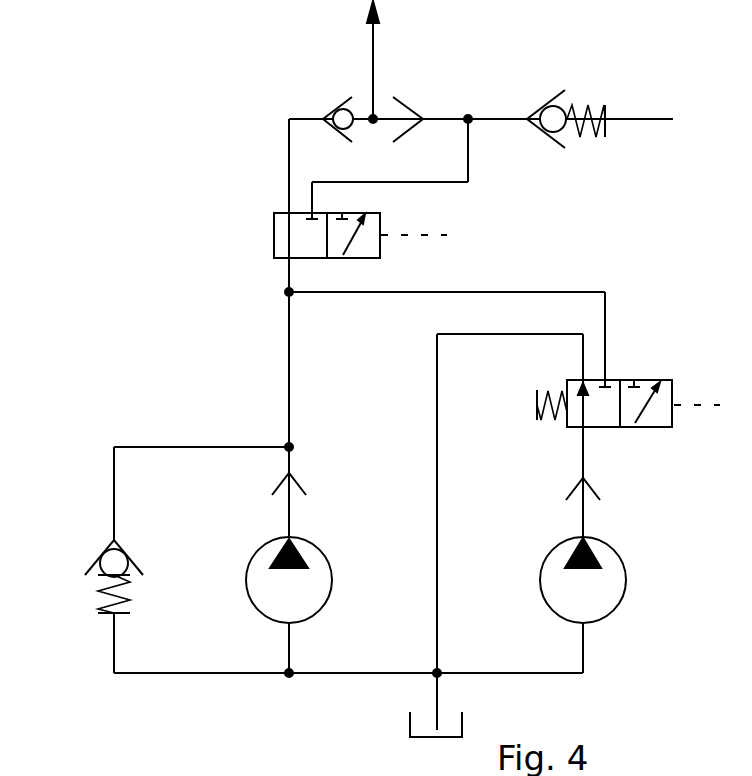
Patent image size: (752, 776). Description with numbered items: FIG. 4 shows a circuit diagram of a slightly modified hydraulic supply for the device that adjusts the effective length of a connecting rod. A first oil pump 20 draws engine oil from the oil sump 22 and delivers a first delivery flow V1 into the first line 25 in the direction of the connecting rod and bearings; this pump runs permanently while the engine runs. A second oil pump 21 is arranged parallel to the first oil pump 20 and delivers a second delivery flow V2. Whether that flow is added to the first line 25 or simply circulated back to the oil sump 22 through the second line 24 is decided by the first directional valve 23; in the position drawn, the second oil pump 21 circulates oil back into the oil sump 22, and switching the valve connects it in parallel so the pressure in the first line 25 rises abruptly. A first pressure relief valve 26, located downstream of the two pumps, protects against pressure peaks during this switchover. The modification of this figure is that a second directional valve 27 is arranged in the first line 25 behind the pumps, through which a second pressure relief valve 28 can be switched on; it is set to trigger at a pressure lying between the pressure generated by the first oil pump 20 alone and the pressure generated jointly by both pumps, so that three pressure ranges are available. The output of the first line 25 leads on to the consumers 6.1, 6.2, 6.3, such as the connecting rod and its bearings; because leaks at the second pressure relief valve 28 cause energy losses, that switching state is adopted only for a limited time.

The hydraulic consumer 6.1 is at (447, 59).
The hydraulic consumer 6.2 is at (447, 59).
The hydraulic consumer 6.3 is at (447, 59).
The first oil pump 20 is at (333, 580).
The second oil pump 21 is at (627, 580).
The oil sump 22 is at (410, 725).
The first directional valve 23 is at (656, 380).
The second line 24 is at (437, 395).
The first line 25 is at (289, 357).
The first pressure relief valve 26 is at (90, 571).
The second directional valve 27 is at (274, 234).
The second pressure relief valve 28 is at (565, 90).
The first delivery flow V1 is at (308, 490).
The second delivery flow V2 is at (602, 496).